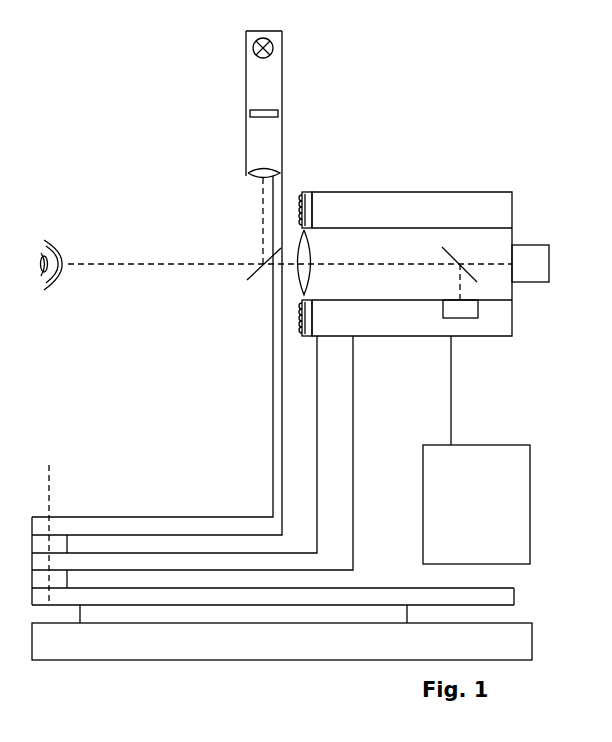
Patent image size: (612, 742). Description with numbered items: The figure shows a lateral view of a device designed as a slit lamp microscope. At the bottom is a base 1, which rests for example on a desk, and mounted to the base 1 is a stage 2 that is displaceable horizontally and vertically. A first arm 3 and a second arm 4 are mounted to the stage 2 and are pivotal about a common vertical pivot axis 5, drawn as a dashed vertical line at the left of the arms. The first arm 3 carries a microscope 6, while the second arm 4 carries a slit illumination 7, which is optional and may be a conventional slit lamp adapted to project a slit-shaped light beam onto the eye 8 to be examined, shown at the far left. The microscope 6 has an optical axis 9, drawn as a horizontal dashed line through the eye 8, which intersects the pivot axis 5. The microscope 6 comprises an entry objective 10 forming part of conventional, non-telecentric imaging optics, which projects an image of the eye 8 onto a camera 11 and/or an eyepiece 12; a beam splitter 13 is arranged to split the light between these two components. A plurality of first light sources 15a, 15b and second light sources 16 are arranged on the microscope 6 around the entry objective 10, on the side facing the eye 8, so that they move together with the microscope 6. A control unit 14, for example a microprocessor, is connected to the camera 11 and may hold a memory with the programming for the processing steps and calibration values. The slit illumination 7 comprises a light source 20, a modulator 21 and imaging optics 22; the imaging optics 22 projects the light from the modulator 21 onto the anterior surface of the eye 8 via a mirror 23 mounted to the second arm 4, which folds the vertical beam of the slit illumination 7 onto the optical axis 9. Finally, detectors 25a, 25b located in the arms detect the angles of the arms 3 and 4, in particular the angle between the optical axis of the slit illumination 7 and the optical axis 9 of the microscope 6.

The base 1 is at (309, 638).
The stage 2 is at (308, 570).
The first arm 3 is at (192, 453).
The second arm 4 is at (157, 283).
The pivot axis 5 is at (73, 523).
The microscope 6 is at (412, 221).
The slit illumination 7 is at (286, 103).
The eye 8 is at (70, 251).
The optical axis 9 is at (290, 288).
The entry objective 10 is at (251, 236).
The camera 11 is at (496, 346).
The eyepiece 12 is at (551, 241).
The beam splitter 13 is at (474, 230).
The control unit 14 is at (496, 450).
The first light source 15a is at (334, 169).
The first light source 15b is at (343, 251).
The second light source 16 is at (337, 236).
The light source 20 is at (257, 45).
The modulator 21 is at (234, 99).
The imaging optics 22 is at (235, 201).
The mirror 23 is at (233, 305).
The detector 25a is at (94, 645).
The detector 25b is at (138, 620).